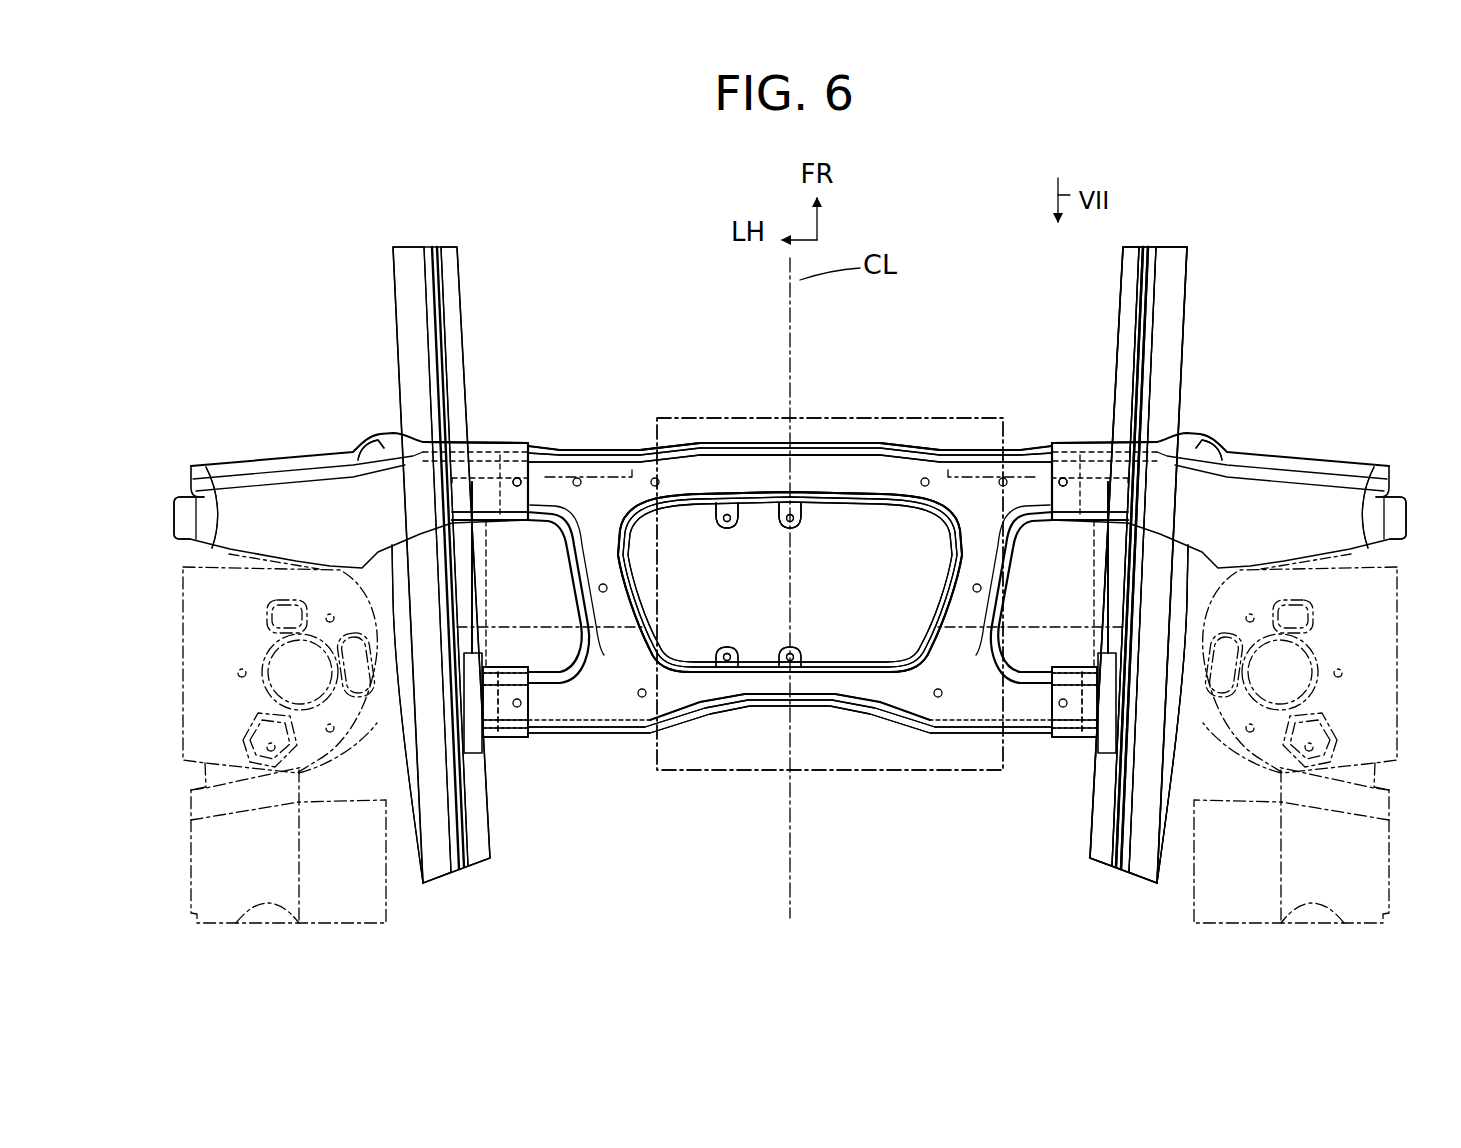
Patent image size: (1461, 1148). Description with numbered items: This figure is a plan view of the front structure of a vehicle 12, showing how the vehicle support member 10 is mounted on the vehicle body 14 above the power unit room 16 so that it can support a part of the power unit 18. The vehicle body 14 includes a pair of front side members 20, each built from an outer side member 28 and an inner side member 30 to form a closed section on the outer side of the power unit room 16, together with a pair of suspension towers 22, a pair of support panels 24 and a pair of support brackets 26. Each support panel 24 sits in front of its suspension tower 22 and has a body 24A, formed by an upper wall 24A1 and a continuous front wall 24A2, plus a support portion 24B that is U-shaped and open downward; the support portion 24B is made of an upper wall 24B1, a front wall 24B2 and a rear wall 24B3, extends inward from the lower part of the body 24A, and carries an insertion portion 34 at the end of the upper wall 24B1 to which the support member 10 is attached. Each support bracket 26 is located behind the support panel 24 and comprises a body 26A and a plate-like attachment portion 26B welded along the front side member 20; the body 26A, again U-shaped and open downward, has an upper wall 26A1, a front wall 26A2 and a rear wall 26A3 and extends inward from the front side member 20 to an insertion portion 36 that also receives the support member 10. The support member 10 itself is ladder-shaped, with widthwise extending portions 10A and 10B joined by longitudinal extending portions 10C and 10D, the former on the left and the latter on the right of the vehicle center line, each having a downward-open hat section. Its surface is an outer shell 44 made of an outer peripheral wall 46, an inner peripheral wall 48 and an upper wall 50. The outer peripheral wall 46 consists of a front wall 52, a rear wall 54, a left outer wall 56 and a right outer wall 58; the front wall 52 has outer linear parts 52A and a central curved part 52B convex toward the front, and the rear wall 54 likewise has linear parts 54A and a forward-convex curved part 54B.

The vehicle support member 10 is at (630, 416).
The widthwise extending portion 10A is at (748, 470).
The widthwise extending portion 10B is at (823, 685).
The longitudinal extending portion 10C is at (600, 556).
The longitudinal extending portion 10D is at (963, 590).
The vehicle 12 is at (1280, 210).
The vehicle body 14 is at (1195, 297).
The power unit room 16 is at (495, 860).
The power unit 18 is at (897, 380).
The front side member 20 is at (463, 257).
The suspension tower 22 is at (205, 655).
The support panel 24 is at (238, 455).
The body 24A is at (178, 497).
The upper wall 24A1 is at (222, 465).
The front wall 24A2 is at (335, 455).
The support portion 24B is at (492, 442).
The upper wall 24B1 is at (562, 457).
The front wall 24B2 is at (480, 447).
The rear wall 24B3 is at (560, 565).
The support bracket 26 is at (507, 745).
The body 26A is at (509, 666).
The upper wall 26A1 is at (523, 695).
The front wall 26A2 is at (590, 660).
The rear wall 26A3 is at (493, 752).
The attachment portion 26B is at (463, 717).
The outer side member 28 is at (395, 272).
The inner side member 30 is at (455, 285).
The insertion portion 34 is at (524, 483).
The insertion portion 36 is at (530, 740).
The outer shell 44 is at (688, 446).
The outer peripheral wall 46 is at (848, 447).
The inner peripheral wall 48 is at (845, 505).
The upper wall 50 is at (747, 480).
The front wall 52 is at (776, 452).
The linear part 52A is at (537, 457).
The curved part 52B is at (752, 458).
The rear wall 54 is at (770, 702).
The linear part 54A is at (581, 724).
The curved part 54B is at (693, 712).
The outer wall 56 is at (557, 515).
The outer wall 58 is at (985, 530).